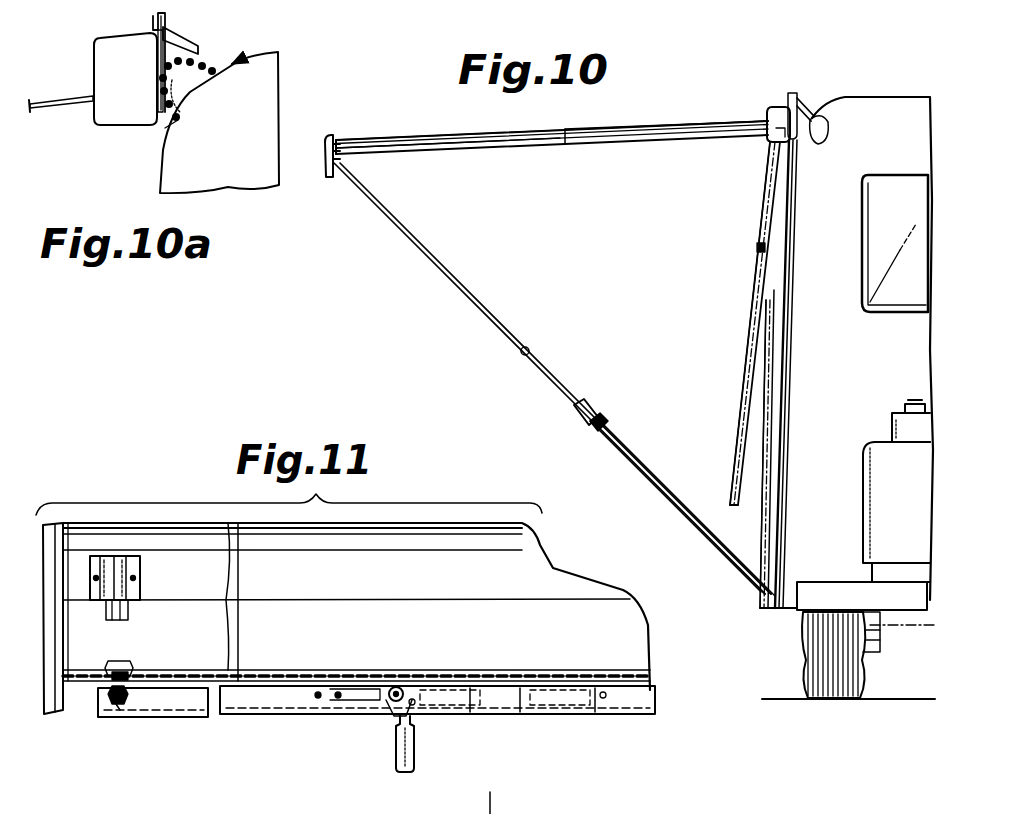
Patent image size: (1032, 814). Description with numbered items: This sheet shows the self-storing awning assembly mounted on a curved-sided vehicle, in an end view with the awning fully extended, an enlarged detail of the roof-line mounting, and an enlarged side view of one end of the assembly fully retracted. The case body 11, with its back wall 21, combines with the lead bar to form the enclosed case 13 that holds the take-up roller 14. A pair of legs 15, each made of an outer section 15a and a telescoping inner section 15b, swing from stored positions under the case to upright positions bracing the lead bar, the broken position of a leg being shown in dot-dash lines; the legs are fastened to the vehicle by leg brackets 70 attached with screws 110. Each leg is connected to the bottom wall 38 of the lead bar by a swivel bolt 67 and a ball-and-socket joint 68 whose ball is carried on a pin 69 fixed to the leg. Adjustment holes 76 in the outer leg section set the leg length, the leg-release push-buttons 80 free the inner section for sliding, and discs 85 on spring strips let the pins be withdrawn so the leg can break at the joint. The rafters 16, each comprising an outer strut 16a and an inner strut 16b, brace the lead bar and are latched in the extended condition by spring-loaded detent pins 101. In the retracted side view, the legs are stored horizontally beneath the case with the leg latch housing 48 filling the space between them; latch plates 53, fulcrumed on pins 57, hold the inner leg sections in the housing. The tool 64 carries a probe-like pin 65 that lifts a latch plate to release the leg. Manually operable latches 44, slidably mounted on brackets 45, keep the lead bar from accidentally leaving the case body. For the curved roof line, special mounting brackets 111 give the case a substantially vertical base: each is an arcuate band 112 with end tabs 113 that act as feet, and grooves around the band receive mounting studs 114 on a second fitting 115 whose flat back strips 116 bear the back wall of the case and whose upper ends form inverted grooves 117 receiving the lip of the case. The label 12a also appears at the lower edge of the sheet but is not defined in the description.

In FIG. 11, the case body 11 is at (562, 568).
In FIG. 11, the bottom rail section 12a is at (490, 792).
In FIG. 10A, the enclosed case 13 is at (88, 48).
In FIG. 10, the enclosed case 13 is at (783, 100).
In FIG. 11, the enclosed case 13 is at (88, 480).
In FIG. 10, the take-up roller 14 is at (566, 442).
In FIG. 10, the legs 15 is at (762, 206).
In FIG. 11, the legs 15 is at (246, 722).
In FIG. 10, the outer leg section 15a is at (762, 240).
In FIG. 10, the inner leg section 15b is at (772, 410).
In FIG. 10, the rafters 16 is at (645, 56).
In FIG. 10, the outer strut 16a is at (406, 156).
In FIG. 10, the inner strut 16b is at (654, 137).
In FIG. 10, the back wall 21 is at (316, 152).
In FIG. 11, the bottom wall of the lead bar 38 is at (170, 670).
In FIG. 10, the latches 44 is at (765, 118).
In FIG. 11, the latches 44 is at (126, 620).
In FIG. 11, the brackets 45 is at (128, 556).
In FIG. 11, the leg latch housing 48 is at (510, 720).
In FIG. 11, the latch plates 53 is at (452, 672).
In FIG. 11, the pins 57 is at (664, 806).
In FIG. 11, the tool 64 is at (416, 742).
In FIG. 11, the probe-like pin 65 is at (396, 716).
In FIG. 11, the swivel bolts 67 is at (128, 672).
In FIG. 11, the ball-and-socket joints 68 is at (100, 718).
In FIG. 11, the pin 69 is at (120, 718).
In FIG. 10, the leg brackets 70 is at (763, 598).
In FIG. 10, the adjustment holes 76 is at (583, 402).
In FIG. 11, the leg-release push-buttons 80 is at (400, 688).
In FIG. 10, the discs 85 is at (602, 421).
In FIG. 10, the detent pins 101 is at (566, 147).
In FIG. 10, the screws 110 is at (410, 139).
In FIG. 10A, the mounting brackets 111 is at (233, 64).
In FIG. 10, the mounting brackets 111 is at (836, 96).
In FIG. 10A, the arcuate band 112 is at (219, 122).
In FIG. 10, the arcuate band 112 is at (806, 118).
In FIG. 10A, the end tabs 113 is at (208, 92).
In FIG. 10, the end tabs 113 is at (828, 136).
In FIG. 10A, the mounting studs 114 is at (292, 41).
In FIG. 10A, the second fitting 115 is at (200, 47).
In FIG. 10A, the flat back strips 116 is at (162, 52).
In FIG. 10A, the inverted grooves 117 is at (166, 14).